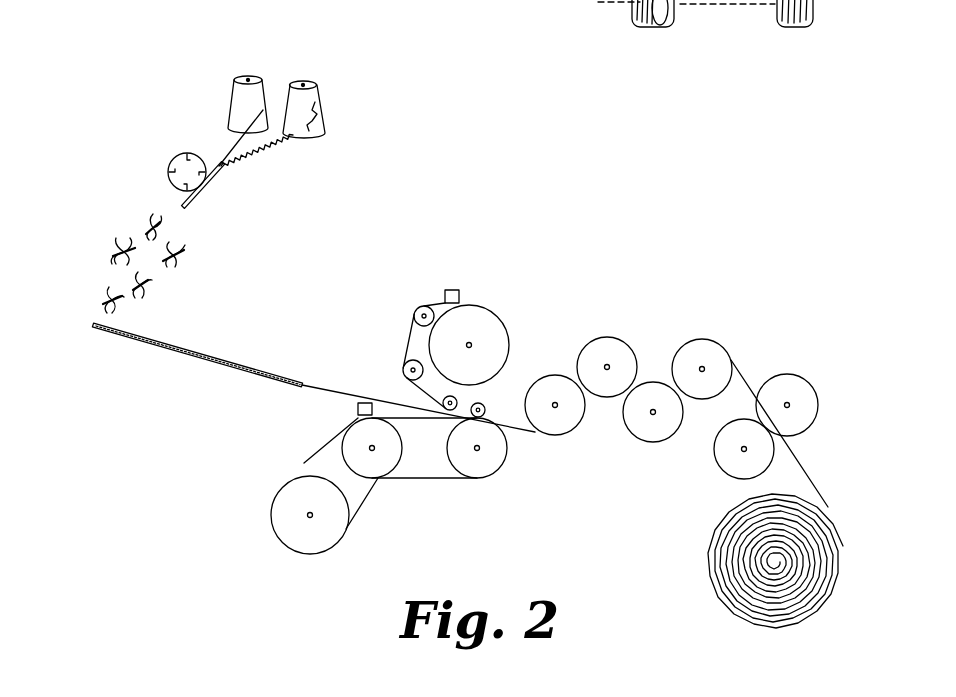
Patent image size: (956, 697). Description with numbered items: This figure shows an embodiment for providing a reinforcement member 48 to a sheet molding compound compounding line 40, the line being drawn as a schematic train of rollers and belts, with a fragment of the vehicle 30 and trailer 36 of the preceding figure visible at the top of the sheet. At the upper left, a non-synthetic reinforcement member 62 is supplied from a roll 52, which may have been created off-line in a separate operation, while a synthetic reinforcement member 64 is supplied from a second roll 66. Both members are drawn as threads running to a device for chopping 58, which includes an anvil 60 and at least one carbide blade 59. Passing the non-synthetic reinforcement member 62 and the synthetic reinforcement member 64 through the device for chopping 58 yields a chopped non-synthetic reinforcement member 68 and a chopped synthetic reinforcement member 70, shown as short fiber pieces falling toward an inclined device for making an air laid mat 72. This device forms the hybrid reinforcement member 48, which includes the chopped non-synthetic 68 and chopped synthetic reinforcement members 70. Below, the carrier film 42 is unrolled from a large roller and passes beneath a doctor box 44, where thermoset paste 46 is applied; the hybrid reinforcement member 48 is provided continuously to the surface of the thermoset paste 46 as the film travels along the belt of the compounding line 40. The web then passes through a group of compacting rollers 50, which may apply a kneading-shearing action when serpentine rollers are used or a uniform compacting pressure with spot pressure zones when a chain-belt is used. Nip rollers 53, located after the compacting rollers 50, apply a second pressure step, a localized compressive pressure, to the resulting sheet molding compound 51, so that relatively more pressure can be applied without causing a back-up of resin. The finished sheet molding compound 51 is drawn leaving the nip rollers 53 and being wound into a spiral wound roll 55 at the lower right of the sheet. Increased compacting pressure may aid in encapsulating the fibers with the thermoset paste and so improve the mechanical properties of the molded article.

The vehicle 30 is at (720, 8).
The trailer 36 is at (600, 3).
The sheet molding compound compounding line 40 is at (478, 482).
The carrier film 42 is at (461, 302).
The doctor box 44 is at (453, 288).
The thermoset paste 46 is at (433, 386).
The hybrid reinforcement member 48 is at (390, 396).
The compacting rollers 50 is at (652, 381).
The sheet molding compound 51 is at (808, 474).
The roll 52 is at (320, 104).
The nip rollers 53 is at (746, 417).
The roll 55 is at (727, 559).
The device for chopping 58 is at (182, 166).
The carbide blade 59 is at (184, 146).
The anvil 60 is at (197, 207).
The non-synthetic reinforcement member 62 is at (268, 158).
The synthetic reinforcement member 64 is at (221, 141).
The second roll 66 is at (247, 70).
The chopped non-synthetic reinforcement member 68 is at (107, 248).
The chopped synthetic reinforcement member 70 is at (180, 270).
The device for making an air laid mat 72 is at (196, 374).